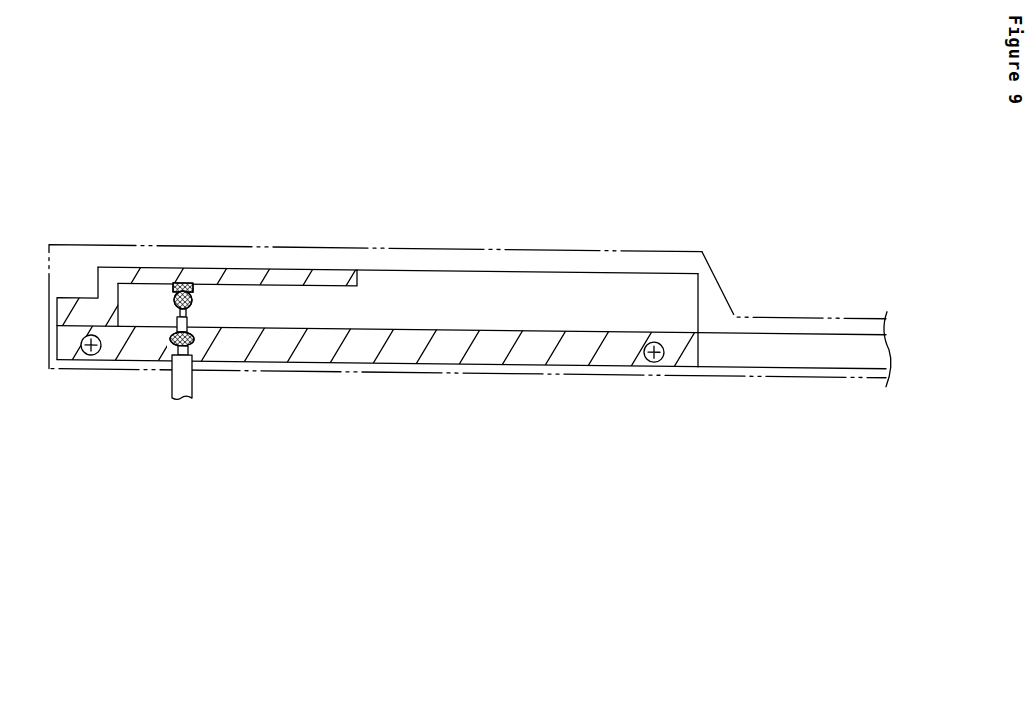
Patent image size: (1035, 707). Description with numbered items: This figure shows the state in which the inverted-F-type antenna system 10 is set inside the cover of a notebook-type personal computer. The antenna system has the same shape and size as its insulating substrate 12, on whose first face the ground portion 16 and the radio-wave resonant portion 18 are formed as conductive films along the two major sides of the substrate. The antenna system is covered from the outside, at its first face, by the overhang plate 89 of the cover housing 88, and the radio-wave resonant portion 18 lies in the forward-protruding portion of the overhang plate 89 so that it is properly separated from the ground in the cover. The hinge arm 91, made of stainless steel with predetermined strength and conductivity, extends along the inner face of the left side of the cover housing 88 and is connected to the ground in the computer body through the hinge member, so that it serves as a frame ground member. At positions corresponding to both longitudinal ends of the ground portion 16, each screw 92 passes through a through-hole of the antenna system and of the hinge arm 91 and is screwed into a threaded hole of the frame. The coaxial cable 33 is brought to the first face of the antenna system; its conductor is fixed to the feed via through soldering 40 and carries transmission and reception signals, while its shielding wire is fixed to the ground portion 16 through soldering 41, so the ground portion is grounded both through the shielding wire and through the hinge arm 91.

The inverted-F-type antenna system 10 is at (434, 266).
The insulating substrate 12 is at (697, 287).
The ground portion 16 is at (433, 345).
The radio-wave resonant portion 18 is at (214, 274).
The coaxial cable 33 is at (171, 382).
The soldering 40 is at (176, 287).
The soldering 41 is at (195, 343).
The cover housing 88 is at (775, 311).
The overhang plate 89 is at (528, 241).
The hinge arm 91 is at (778, 355).
The screw 92 is at (90, 355).